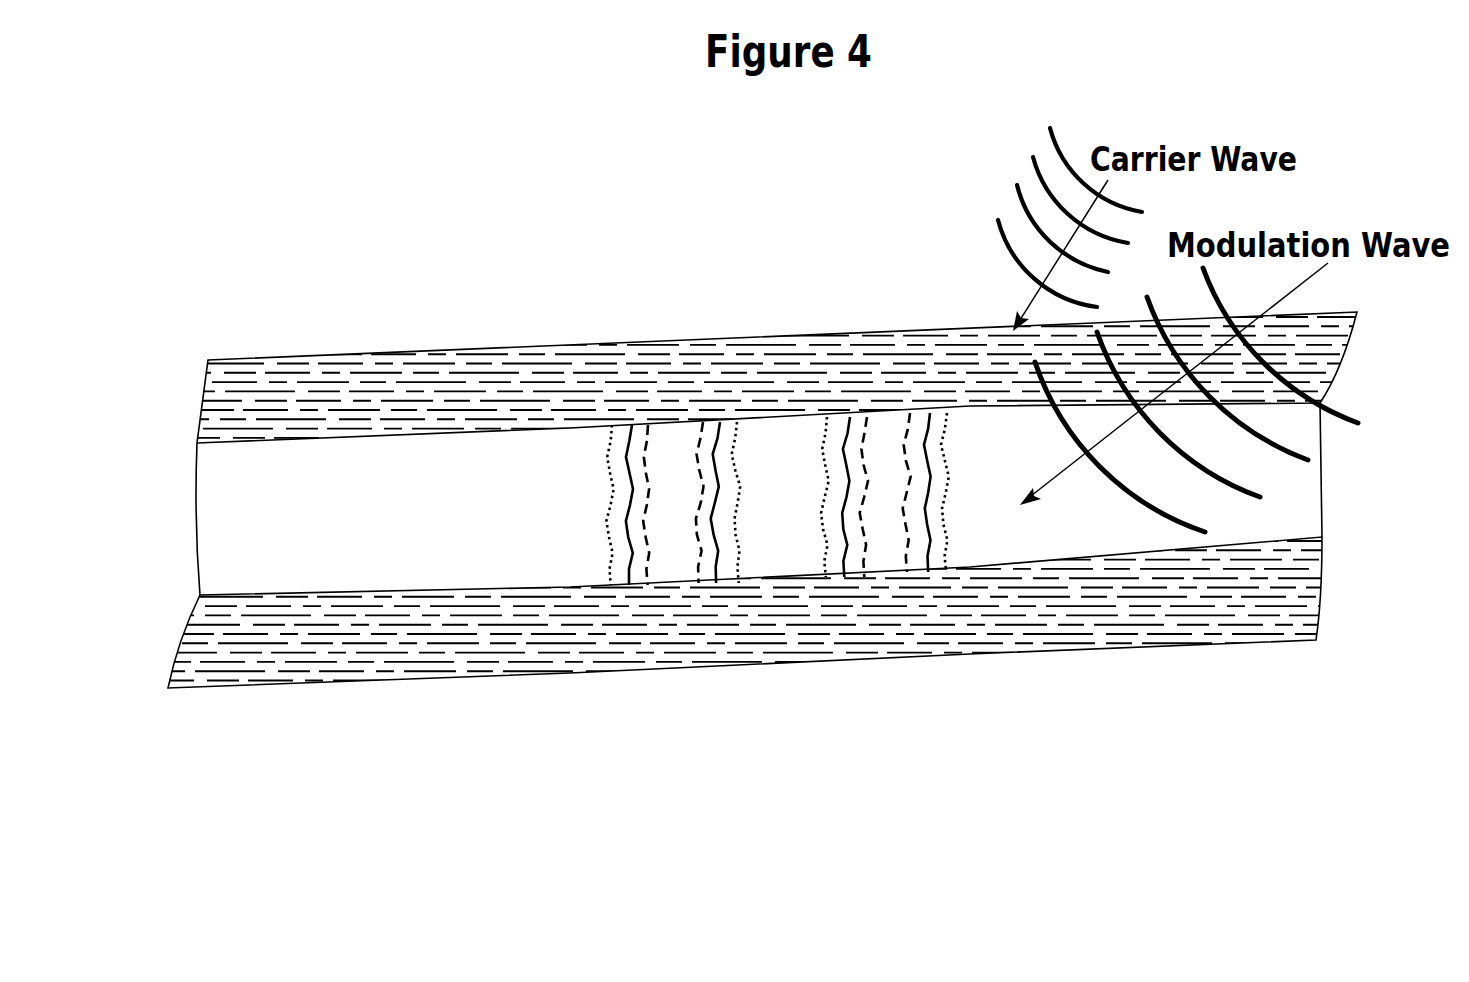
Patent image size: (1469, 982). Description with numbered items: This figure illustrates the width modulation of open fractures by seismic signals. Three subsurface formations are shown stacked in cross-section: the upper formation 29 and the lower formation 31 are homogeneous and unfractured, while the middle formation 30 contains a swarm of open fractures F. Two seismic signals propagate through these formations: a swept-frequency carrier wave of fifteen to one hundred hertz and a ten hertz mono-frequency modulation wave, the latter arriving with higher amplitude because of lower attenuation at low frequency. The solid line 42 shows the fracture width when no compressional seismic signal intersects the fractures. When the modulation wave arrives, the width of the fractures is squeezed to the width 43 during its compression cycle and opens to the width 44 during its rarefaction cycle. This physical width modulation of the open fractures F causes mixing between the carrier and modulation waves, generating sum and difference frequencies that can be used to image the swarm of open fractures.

The subsurface formation 29 is at (766, 377).
The subsurface formation 30 is at (759, 499).
The subsurface formation 31 is at (745, 613).
The solid line 42 is at (228, 195).
The squeezed fracture width 43 is at (228, 237).
The opened fracture width 44 is at (228, 273).
The swarm of open fractures F is at (770, 551).